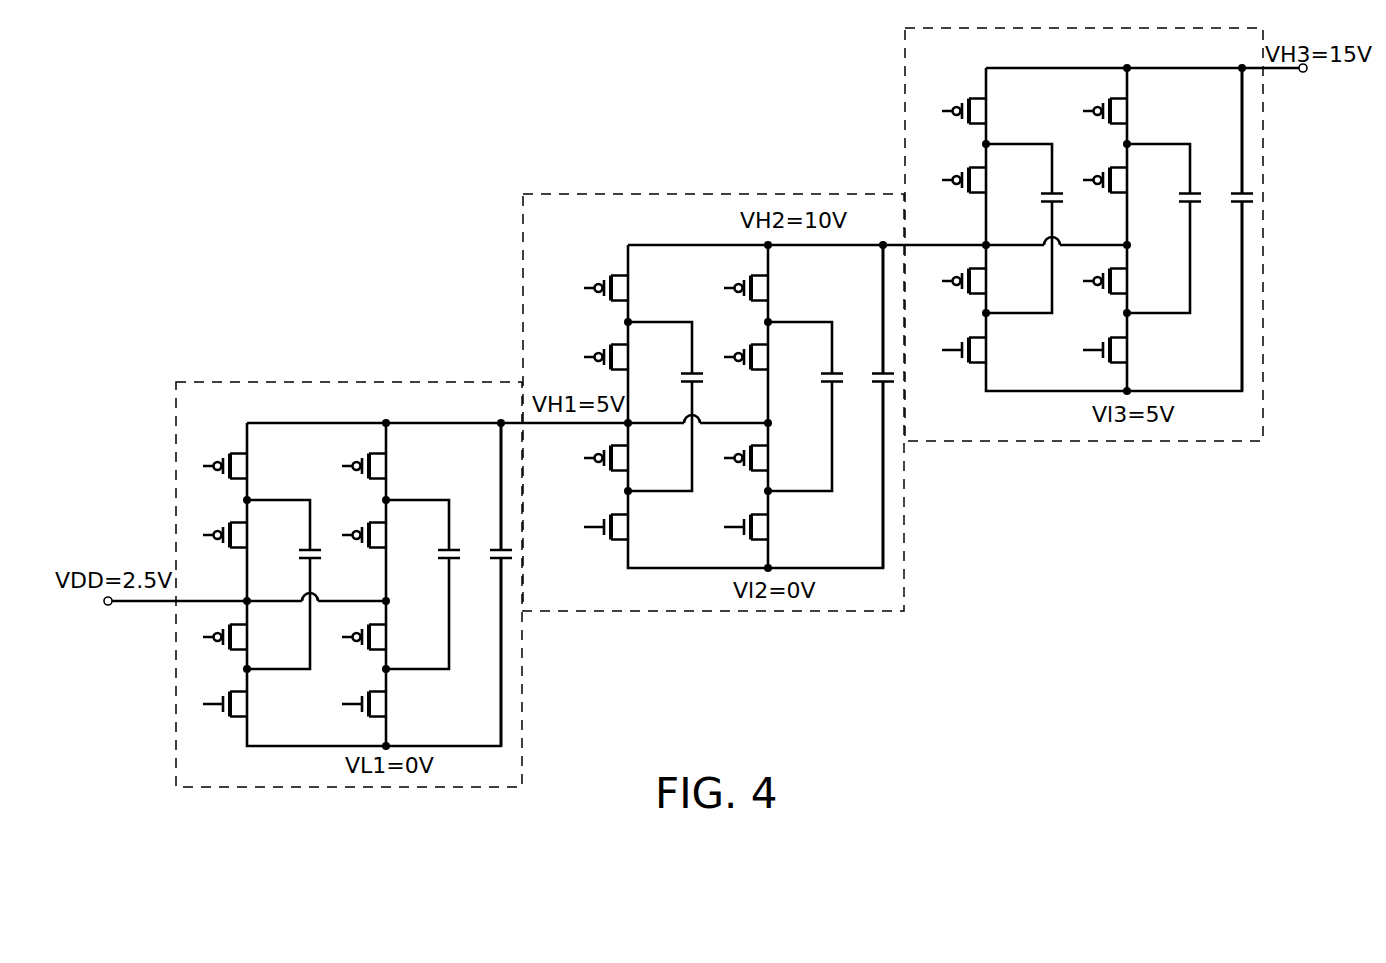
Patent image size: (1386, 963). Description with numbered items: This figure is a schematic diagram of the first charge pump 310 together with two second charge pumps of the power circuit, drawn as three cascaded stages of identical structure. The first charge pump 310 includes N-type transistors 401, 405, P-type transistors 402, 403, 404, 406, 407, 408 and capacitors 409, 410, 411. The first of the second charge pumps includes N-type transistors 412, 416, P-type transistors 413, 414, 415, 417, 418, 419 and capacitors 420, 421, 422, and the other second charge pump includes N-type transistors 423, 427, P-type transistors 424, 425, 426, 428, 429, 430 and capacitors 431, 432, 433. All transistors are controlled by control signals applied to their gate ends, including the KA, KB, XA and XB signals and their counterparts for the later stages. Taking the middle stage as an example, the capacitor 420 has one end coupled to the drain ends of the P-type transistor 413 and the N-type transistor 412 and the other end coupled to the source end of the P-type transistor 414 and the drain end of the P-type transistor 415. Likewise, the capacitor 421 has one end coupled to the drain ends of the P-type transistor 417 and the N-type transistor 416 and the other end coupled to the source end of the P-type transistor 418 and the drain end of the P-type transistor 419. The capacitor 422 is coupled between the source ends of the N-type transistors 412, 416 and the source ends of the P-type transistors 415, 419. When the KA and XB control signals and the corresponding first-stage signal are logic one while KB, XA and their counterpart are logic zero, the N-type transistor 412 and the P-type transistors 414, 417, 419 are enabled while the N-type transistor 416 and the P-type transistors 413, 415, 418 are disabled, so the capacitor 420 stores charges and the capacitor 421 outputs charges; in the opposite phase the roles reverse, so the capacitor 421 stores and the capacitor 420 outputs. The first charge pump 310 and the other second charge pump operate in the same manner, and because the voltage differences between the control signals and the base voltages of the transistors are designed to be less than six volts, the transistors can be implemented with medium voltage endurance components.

The first charge pump 310 is at (323, 382).
The N-type transistor 401 is at (238, 700).
The P-type transistor 402 is at (239, 633).
The P-type transistor 403 is at (239, 531).
The P-type transistor 404 is at (239, 462).
The N-type transistor 405 is at (377, 700).
The P-type transistor 406 is at (378, 633).
The P-type transistor 407 is at (378, 531).
The P-type transistor 408 is at (378, 462).
The capacitor 409 is at (320, 560).
The capacitor 410 is at (447, 561).
The capacitor 411 is at (499, 549).
The N-type transistor 412 is at (619, 524).
The P-type transistor 413 is at (620, 455).
The P-type transistor 414 is at (614, 354).
The P-type transistor 415 is at (614, 285).
The N-type transistor 416 is at (759, 524).
The P-type transistor 417 is at (760, 455).
The P-type transistor 418 is at (754, 354).
The P-type transistor 419 is at (754, 285).
The capacitor 420 is at (702, 383).
The capacitor 421 is at (830, 384).
The capacitor 422 is at (881, 372).
The N-type transistor 423 is at (970, 347).
The P-type transistor 424 is at (971, 278).
The P-type transistor 425 is at (971, 177).
The P-type transistor 426 is at (971, 108).
The N-type transistor 427 is at (1112, 347).
The P-type transistor 428 is at (1113, 278).
The P-type transistor 429 is at (1116, 177).
The P-type transistor 430 is at (1112, 108).
The capacitor 431 is at (1062, 203).
The capacitor 432 is at (1188, 204).
The capacitor 433 is at (1240, 192).